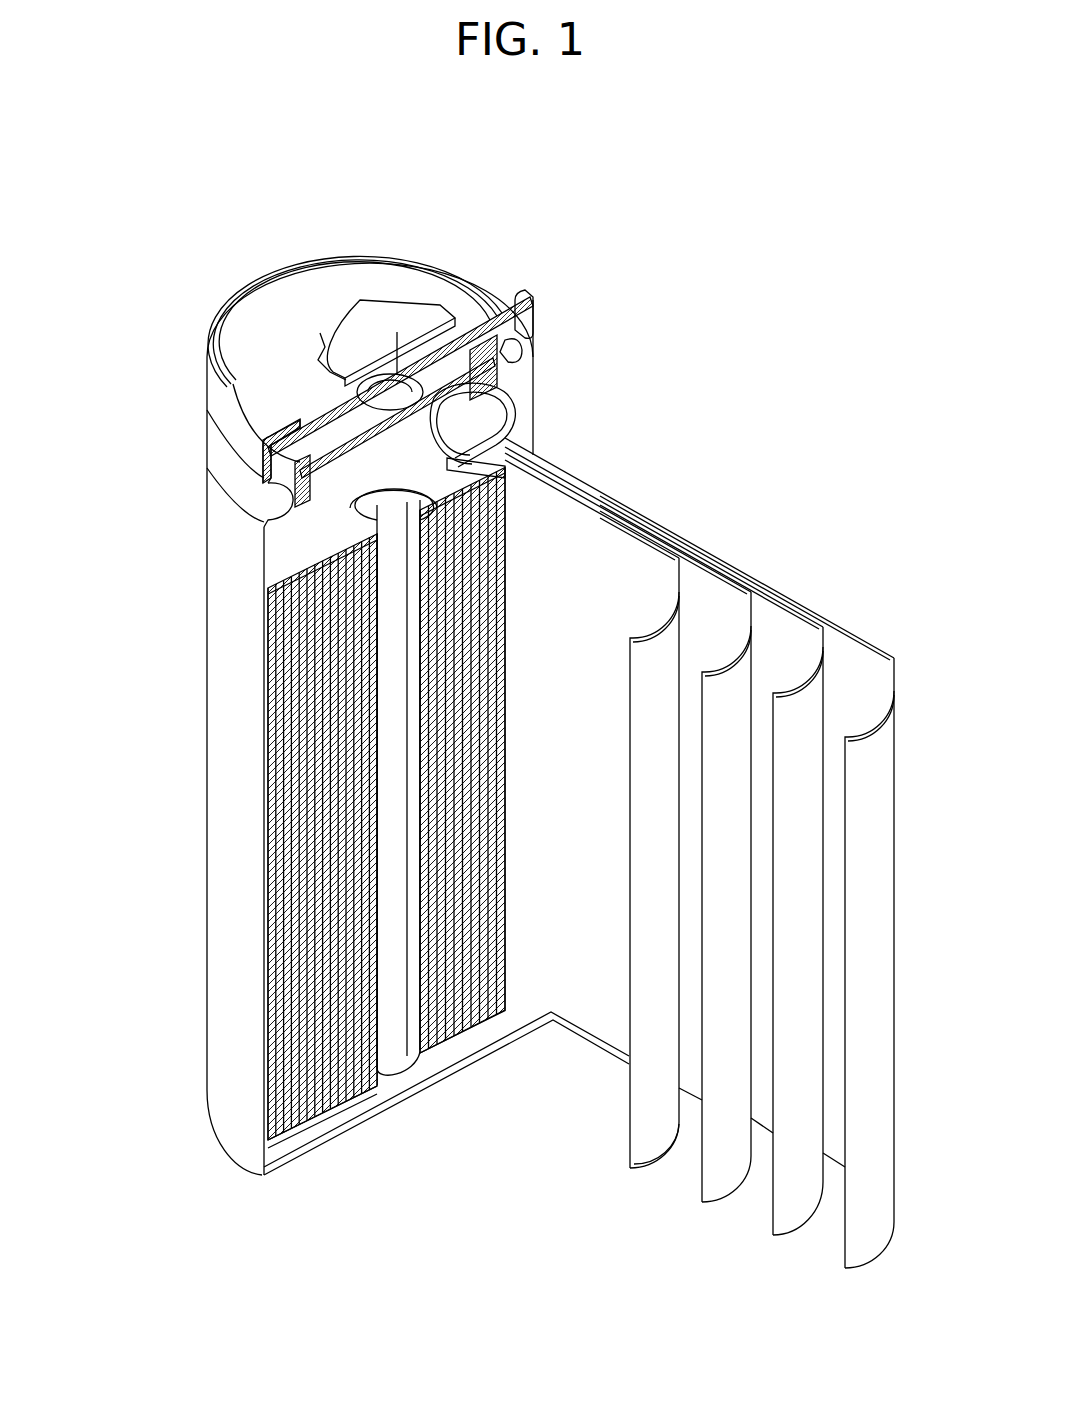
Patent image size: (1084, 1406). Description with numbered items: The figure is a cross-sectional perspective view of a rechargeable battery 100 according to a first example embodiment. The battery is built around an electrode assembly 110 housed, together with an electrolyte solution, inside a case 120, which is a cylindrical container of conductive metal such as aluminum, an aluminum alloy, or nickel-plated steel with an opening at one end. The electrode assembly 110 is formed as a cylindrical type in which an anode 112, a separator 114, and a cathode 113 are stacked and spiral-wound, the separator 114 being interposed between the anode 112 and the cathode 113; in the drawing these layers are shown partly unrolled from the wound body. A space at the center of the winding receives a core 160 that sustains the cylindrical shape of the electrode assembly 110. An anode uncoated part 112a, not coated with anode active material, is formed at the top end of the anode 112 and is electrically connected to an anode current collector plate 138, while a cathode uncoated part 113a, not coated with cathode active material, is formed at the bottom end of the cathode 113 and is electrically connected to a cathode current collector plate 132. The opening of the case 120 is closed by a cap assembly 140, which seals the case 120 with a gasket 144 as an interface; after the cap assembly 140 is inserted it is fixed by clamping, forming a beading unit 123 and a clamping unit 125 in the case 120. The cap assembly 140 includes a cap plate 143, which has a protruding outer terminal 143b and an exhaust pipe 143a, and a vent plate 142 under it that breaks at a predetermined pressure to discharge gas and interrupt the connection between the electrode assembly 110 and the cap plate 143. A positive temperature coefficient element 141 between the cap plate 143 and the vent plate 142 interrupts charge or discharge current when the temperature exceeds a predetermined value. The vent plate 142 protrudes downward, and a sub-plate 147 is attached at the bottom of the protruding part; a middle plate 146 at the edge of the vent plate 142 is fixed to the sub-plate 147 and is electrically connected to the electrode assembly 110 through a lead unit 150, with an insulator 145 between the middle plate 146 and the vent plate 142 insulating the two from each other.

The rechargeable battery 100 is at (377, 171).
The electrode assembly 110 is at (581, 884).
The anode 112 is at (699, 875).
The anode uncoated part 112a is at (777, 607).
The cathode 113 is at (592, 856).
The cathode uncoated part 113a is at (646, 1173).
The separator 114 is at (722, 1188).
The case 120 is at (326, 719).
The beading unit 123 is at (278, 498).
The clamping unit 125 is at (286, 487).
The cathode current collector plate 132 is at (300, 1135).
The anode current collector plate 138 is at (298, 550).
The cap assembly 140 is at (400, 356).
The positive temperature coefficient element 141 is at (535, 320).
The vent plate 142 is at (530, 325).
The cap plate 143 is at (368, 356).
The exhaust pipe 143a is at (310, 372).
The outer terminal 143b is at (355, 333).
The gasket 144 is at (283, 440).
The insulator 145 is at (505, 362).
The middle plate 146 is at (500, 392).
The sub-plate 147 is at (524, 425).
The lead unit 150 is at (518, 428).
The core 160 is at (395, 1030).